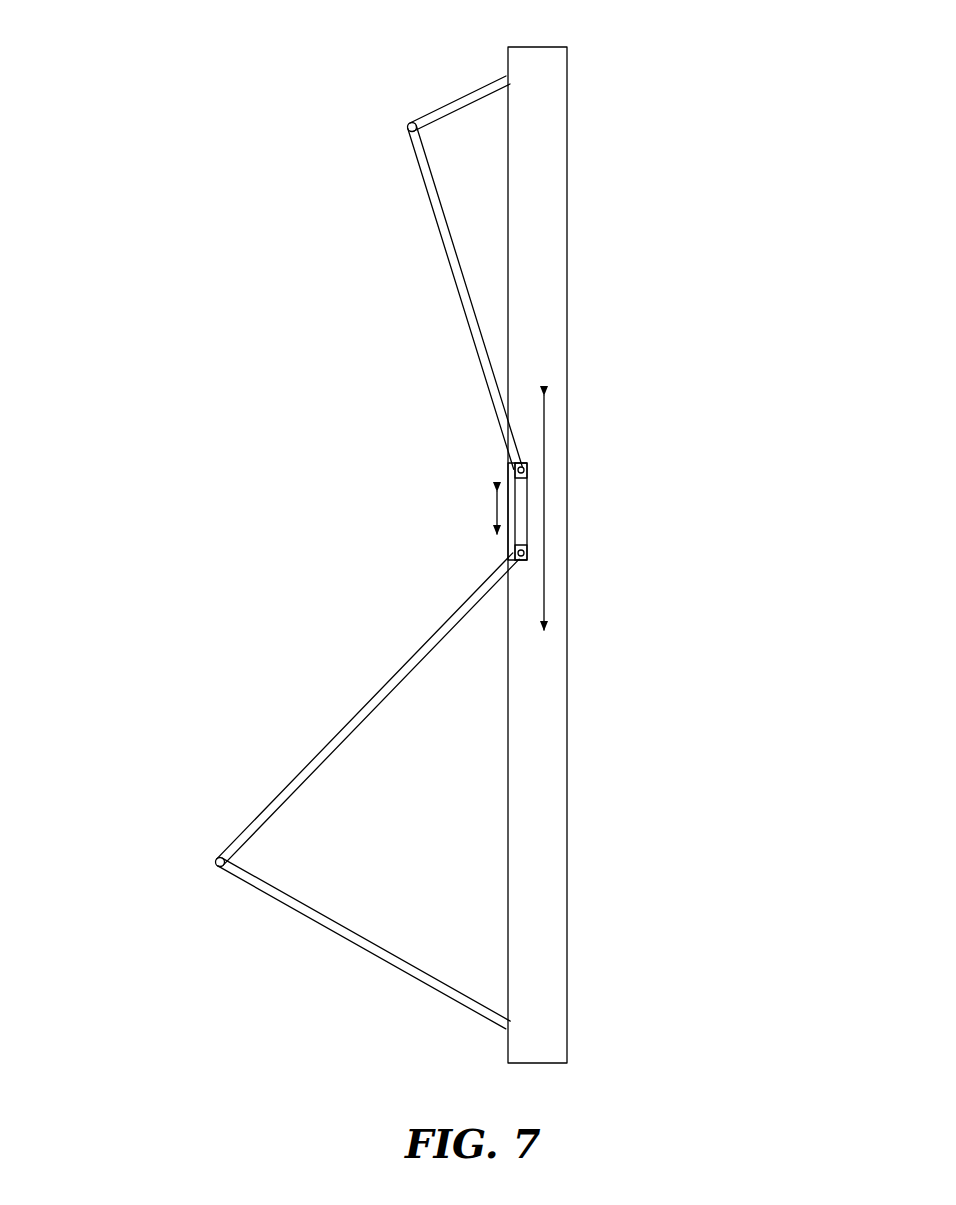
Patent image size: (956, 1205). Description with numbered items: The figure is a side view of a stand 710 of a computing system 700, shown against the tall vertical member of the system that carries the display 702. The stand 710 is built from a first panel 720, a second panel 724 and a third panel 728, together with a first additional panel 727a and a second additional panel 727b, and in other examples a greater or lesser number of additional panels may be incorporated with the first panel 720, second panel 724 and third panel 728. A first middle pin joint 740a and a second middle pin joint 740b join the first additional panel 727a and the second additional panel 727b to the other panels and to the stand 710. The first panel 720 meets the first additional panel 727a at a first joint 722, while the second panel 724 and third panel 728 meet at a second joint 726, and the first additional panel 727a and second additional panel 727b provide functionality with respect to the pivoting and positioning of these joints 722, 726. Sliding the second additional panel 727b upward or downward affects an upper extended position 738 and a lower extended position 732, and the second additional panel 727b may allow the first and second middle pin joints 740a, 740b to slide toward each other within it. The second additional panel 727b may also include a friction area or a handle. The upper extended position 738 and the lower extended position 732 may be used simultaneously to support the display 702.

The computing system 700 is at (555, 47).
The display 702 is at (708, 313).
The stand 710 is at (225, 500).
The first panel 720 is at (477, 80).
The first joint 722 is at (408, 123).
The second panel 724 is at (385, 693).
The second joint 726 is at (218, 858).
The first additional panel 727a is at (466, 313).
The second additional panel 727b is at (520, 520).
The third panel 728 is at (393, 967).
The lower extended position 732 is at (158, 924).
The upper extended position 738 is at (318, 193).
The first middle pin joint 740a is at (513, 465).
The second middle pin joint 740b is at (510, 562).